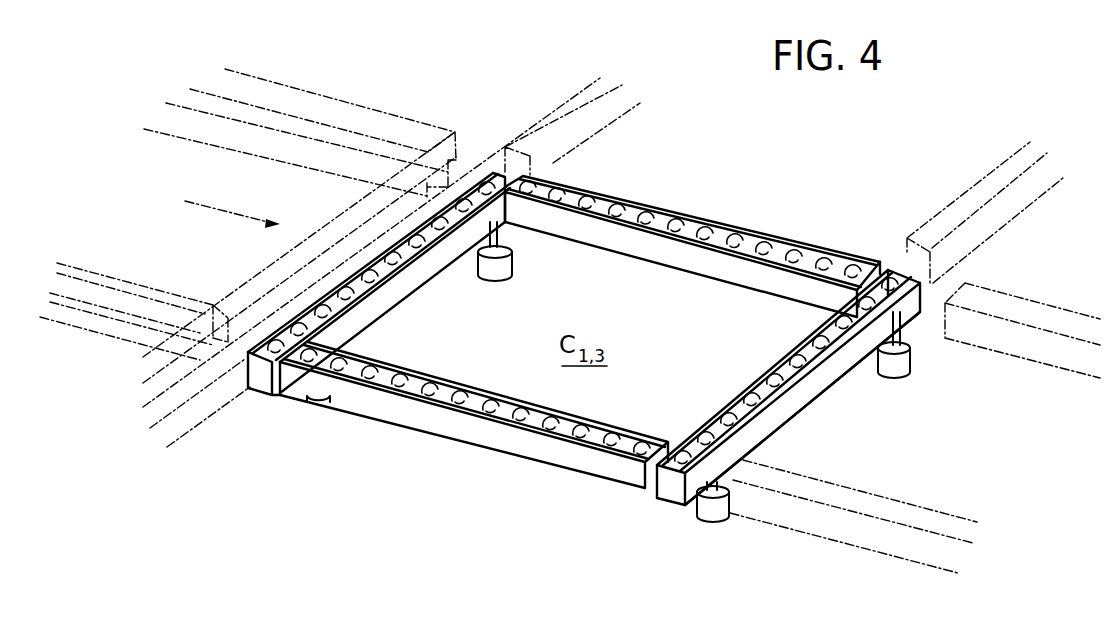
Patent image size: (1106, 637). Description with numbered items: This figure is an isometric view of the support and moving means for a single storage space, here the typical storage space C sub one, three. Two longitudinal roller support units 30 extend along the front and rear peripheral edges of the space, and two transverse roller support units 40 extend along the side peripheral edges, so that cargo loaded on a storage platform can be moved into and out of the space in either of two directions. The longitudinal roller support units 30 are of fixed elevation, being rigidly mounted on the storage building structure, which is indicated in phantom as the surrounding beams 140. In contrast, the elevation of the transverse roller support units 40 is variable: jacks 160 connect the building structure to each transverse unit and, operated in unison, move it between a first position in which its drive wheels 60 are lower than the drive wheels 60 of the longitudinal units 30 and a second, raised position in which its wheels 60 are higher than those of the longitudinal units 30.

The longitudinal roller support unit 30 is at (690, 227).
The transverse roller support unit 40 is at (430, 266).
The drive wheel 60 is at (820, 263).
The floor beam 140 is at (387, 112).
The jack 160 is at (510, 265).